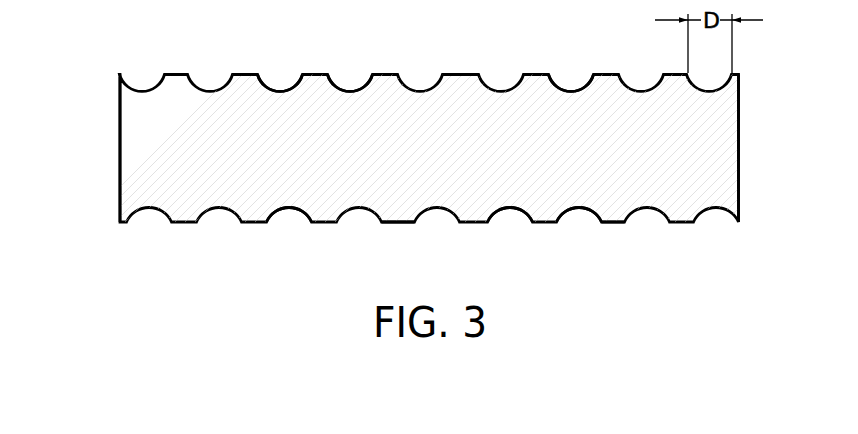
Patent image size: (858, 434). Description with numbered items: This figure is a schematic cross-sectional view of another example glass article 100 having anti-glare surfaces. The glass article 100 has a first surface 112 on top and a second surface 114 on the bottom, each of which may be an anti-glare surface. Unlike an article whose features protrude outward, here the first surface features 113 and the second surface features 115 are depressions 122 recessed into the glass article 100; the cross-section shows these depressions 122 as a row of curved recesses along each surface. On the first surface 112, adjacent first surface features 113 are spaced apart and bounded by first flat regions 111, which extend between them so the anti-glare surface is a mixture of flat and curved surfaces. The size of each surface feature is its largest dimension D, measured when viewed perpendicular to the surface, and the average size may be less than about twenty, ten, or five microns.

The glass article 100 is at (748, 111).
The first flat region 111 is at (458, 74).
The first surface 112 is at (120, 78).
The first surface feature 113 is at (229, 87).
The second surface 114 is at (738, 220).
The second surface feature 115 is at (635, 222).
The depression 122 is at (278, 88).